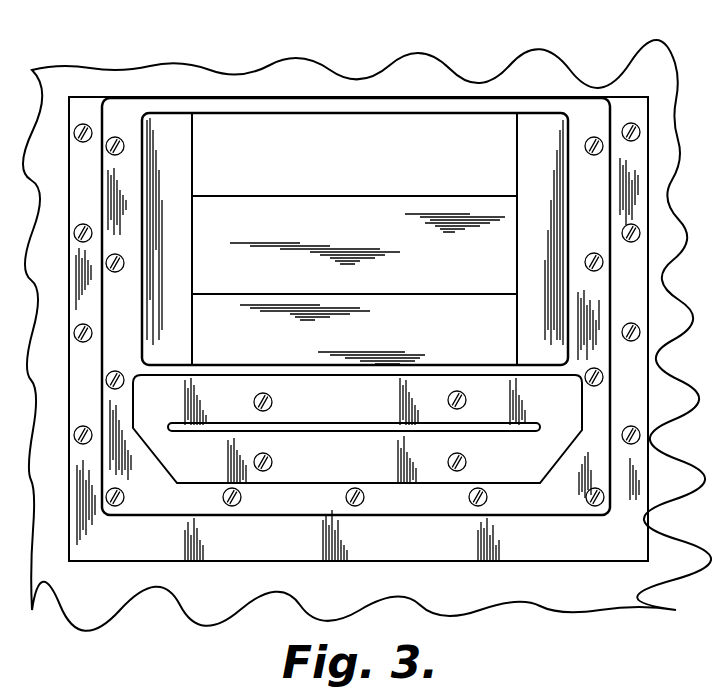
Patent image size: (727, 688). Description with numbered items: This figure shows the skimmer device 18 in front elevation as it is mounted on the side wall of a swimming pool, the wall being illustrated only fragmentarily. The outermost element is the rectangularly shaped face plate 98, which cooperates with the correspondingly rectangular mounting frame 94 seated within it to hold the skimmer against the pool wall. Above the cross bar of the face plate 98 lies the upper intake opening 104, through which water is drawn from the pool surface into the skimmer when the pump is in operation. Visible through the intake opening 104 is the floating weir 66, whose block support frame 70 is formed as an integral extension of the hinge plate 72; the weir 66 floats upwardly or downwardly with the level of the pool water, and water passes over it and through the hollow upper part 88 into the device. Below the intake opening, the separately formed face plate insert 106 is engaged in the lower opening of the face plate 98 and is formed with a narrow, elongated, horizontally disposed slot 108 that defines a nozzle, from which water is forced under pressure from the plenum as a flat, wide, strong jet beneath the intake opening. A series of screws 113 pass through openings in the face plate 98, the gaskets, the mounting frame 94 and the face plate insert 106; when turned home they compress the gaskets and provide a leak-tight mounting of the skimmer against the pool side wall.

The device 18 is at (306, 78).
The face plate 98 is at (415, 97).
The mounting frame 94 is at (400, 113).
The intake opening 104 is at (284, 114).
The floating weir 66 is at (342, 188).
The hollow upper part 88 is at (176, 163).
The block support frame 70 is at (448, 212).
The hinge plate 72 is at (426, 335).
The face plate insert 106 is at (372, 410).
The slot 108 is at (318, 433).
The screws 113 is at (75, 230).